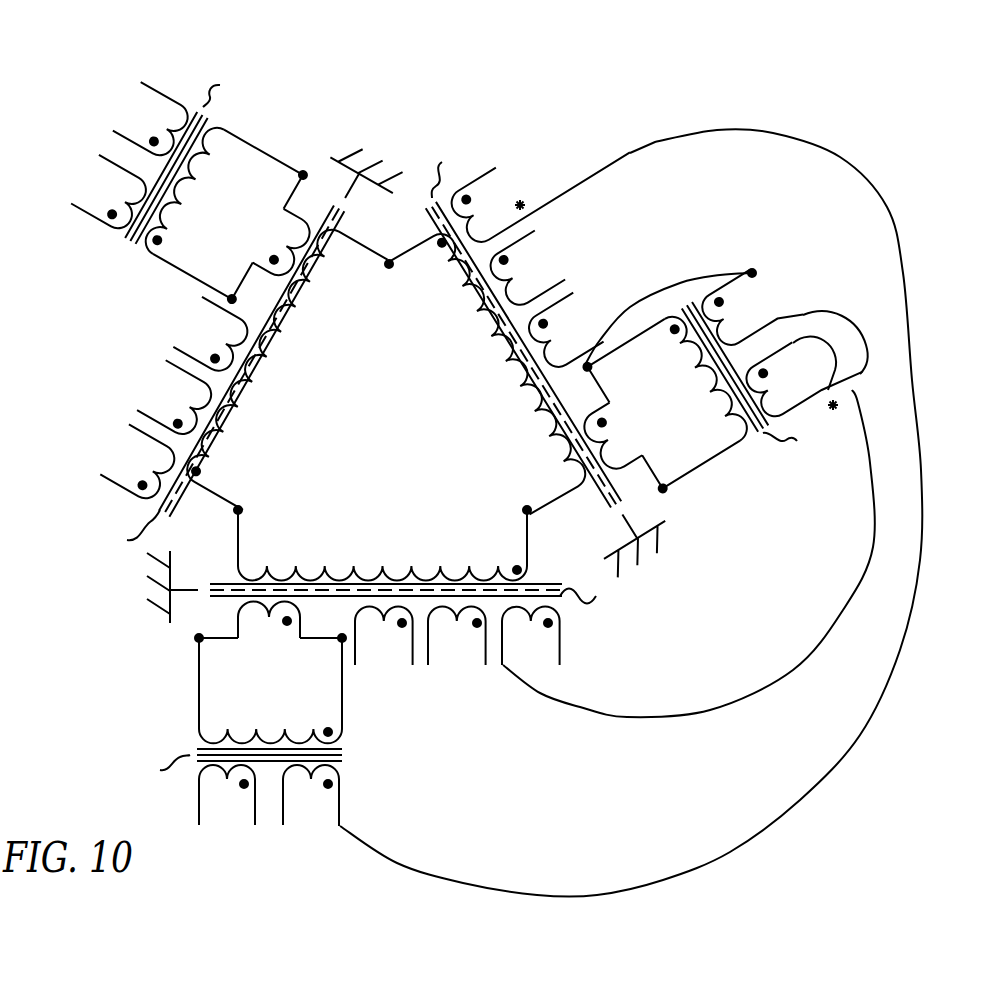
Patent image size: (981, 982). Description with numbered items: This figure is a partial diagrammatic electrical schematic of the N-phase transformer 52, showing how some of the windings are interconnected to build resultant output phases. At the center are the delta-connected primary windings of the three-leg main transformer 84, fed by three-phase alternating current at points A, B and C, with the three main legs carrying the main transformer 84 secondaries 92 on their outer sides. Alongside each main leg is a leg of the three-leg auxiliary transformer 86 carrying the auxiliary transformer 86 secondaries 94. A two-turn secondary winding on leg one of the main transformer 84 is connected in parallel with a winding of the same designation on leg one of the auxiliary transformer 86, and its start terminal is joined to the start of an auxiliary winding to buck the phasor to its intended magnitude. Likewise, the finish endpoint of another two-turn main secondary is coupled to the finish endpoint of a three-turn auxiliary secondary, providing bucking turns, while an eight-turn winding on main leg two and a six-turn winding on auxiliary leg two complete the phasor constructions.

The N-phase transformer 52 is at (669, 95).
The three-leg main transformer 84 is at (385, 459).
The three-leg auxiliary transformer 86 is at (165, 714).
The main transformer secondaries 92 is at (183, 290).
The auxiliary transformer secondaries 94 is at (127, 78).